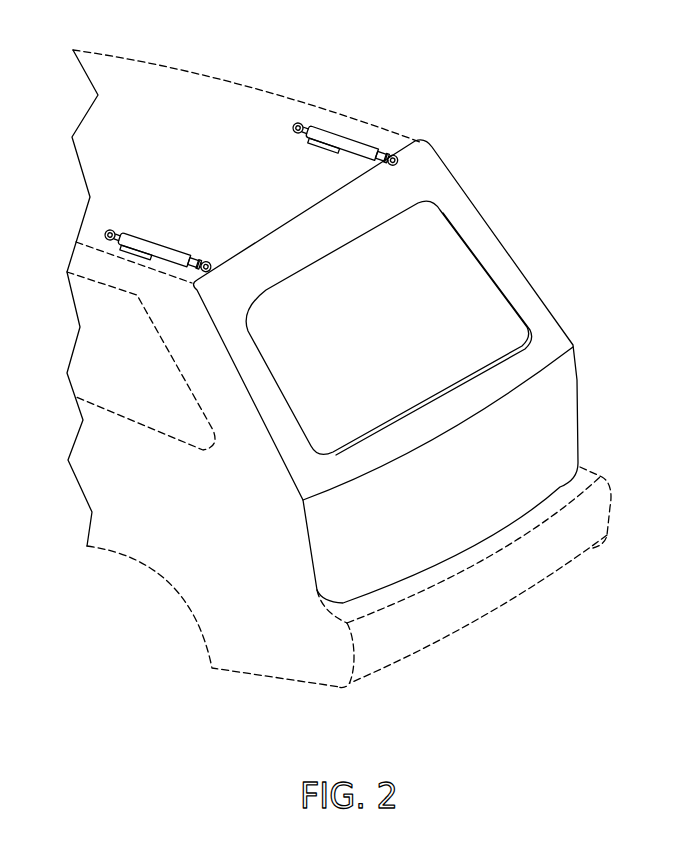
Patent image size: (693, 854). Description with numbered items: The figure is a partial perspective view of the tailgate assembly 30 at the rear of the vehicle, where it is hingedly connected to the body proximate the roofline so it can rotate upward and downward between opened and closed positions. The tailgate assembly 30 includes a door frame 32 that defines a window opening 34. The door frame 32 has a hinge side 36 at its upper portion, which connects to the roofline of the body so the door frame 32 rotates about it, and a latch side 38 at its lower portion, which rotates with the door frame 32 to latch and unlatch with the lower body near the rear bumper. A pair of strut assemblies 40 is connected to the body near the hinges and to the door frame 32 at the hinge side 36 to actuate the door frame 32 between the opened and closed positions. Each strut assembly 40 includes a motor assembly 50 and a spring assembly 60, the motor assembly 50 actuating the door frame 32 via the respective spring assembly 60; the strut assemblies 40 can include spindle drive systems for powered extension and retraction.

The tailgate assembly 30 is at (429, 371).
The door frame 32 is at (578, 398).
The window opening 34 is at (468, 252).
The hinge side 36 is at (280, 247).
The latch side 38 is at (525, 514).
The strut assembly 40 is at (203, 162).
The motor assembly 50 is at (132, 256).
The spring assembly 60 is at (158, 231).